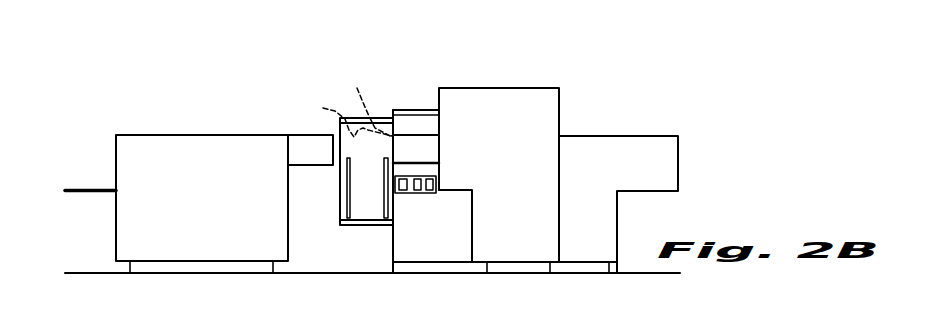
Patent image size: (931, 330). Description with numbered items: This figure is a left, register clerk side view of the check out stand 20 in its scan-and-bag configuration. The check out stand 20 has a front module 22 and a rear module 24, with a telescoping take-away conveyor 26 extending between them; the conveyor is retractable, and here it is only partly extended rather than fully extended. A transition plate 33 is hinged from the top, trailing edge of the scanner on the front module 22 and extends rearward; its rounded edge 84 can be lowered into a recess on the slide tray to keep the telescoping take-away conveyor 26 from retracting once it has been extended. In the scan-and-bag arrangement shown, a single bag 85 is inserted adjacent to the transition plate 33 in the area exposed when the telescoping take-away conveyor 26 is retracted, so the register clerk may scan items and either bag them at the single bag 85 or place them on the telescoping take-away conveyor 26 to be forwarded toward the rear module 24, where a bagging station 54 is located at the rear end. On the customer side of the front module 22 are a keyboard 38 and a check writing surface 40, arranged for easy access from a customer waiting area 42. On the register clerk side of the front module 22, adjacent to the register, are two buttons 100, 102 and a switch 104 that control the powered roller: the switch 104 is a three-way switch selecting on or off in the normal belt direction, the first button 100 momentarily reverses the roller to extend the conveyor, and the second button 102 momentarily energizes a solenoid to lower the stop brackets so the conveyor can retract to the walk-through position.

The check out stand 20 is at (360, 48).
The front module 22 is at (597, 118).
The rear module 24 is at (192, 104).
The telescoping take-away conveyor 26 is at (295, 147).
The transition plate 33 is at (390, 153).
The keyboard 38 is at (412, 109).
The check writing surface 40 is at (379, 135).
The customer waiting area 42 is at (405, 66).
The bagging station 54 is at (102, 189).
The rounded edge 84 is at (347, 117).
The single bag 85 is at (362, 213).
The first button 100 is at (418, 191).
The second button 102 is at (430, 191).
The switch 104 is at (403, 191).